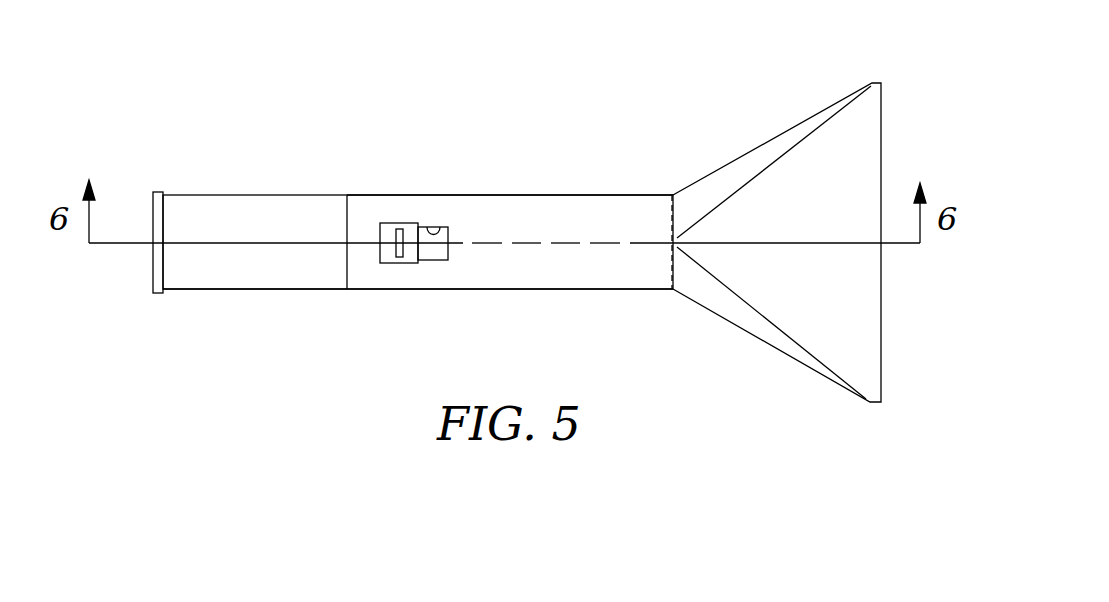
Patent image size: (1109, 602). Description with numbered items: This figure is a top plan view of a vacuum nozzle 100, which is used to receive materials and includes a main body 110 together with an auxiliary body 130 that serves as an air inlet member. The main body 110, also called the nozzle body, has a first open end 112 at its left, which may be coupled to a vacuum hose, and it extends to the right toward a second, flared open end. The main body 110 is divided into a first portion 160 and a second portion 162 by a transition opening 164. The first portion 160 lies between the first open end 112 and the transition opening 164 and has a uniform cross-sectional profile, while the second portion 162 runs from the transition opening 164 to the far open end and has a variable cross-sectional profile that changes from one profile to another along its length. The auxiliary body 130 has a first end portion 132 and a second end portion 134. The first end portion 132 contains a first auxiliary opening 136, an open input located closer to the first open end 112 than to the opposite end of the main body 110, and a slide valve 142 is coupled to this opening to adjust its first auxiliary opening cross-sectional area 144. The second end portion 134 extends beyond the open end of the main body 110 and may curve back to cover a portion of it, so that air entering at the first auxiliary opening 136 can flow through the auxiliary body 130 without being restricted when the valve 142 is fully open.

The vacuum nozzle 100 is at (785, 72).
The main body 110 is at (233, 192).
The first open end 112 is at (150, 265).
The auxiliary body 130 is at (633, 210).
The first end portion 132 is at (405, 210).
The second end portion 134 is at (853, 357).
The first auxiliary opening 136 is at (435, 230).
The valve 142 is at (393, 265).
The first auxiliary opening cross-sectional area 144 is at (430, 249).
The first portion 160 is at (277, 290).
The second portion 162 is at (783, 353).
The transition opening 164 is at (670, 272).